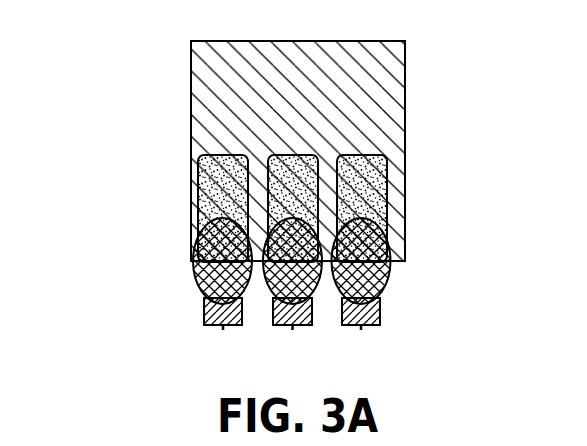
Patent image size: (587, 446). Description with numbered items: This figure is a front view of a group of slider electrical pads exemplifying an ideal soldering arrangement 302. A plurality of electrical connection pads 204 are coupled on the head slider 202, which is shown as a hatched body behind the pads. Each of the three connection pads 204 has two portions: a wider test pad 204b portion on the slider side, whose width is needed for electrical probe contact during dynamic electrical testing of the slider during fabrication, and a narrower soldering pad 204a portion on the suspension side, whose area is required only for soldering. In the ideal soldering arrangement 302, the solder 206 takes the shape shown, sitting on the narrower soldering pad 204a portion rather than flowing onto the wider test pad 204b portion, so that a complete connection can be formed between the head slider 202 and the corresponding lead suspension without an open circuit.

The head slider 202 is at (387, 88).
The electrical connection pads 204 is at (335, 199).
The soldering pad 204a is at (377, 227).
The test pad 204b is at (375, 193).
The solder 206 is at (190, 277).
The ideal soldering arrangement 302 is at (184, 231).